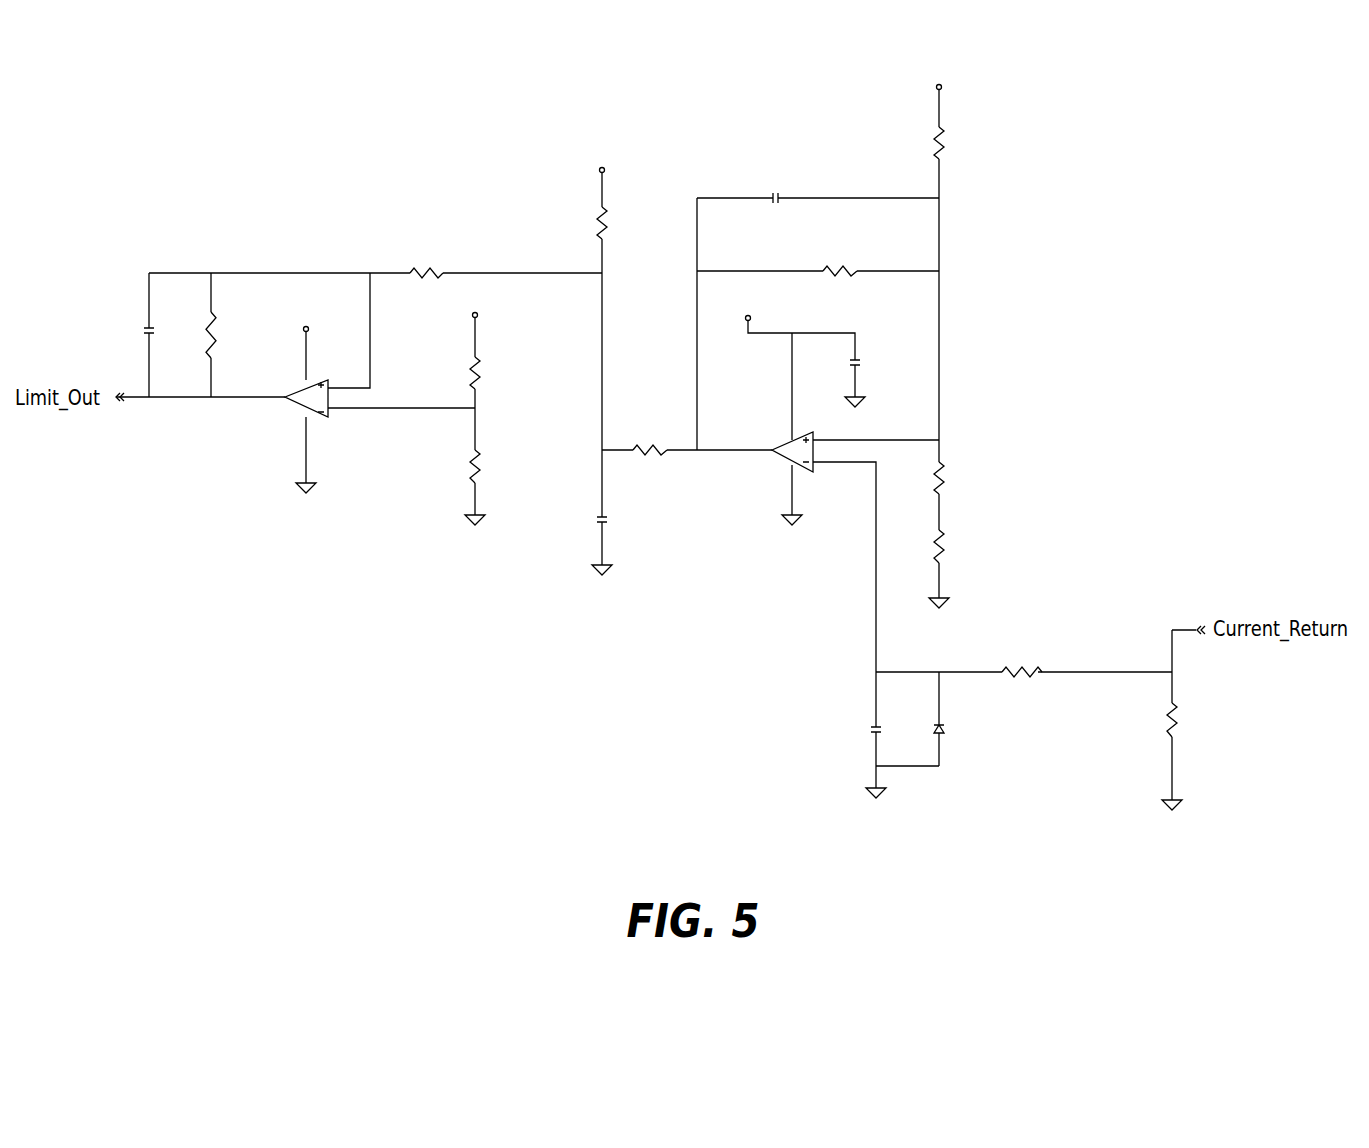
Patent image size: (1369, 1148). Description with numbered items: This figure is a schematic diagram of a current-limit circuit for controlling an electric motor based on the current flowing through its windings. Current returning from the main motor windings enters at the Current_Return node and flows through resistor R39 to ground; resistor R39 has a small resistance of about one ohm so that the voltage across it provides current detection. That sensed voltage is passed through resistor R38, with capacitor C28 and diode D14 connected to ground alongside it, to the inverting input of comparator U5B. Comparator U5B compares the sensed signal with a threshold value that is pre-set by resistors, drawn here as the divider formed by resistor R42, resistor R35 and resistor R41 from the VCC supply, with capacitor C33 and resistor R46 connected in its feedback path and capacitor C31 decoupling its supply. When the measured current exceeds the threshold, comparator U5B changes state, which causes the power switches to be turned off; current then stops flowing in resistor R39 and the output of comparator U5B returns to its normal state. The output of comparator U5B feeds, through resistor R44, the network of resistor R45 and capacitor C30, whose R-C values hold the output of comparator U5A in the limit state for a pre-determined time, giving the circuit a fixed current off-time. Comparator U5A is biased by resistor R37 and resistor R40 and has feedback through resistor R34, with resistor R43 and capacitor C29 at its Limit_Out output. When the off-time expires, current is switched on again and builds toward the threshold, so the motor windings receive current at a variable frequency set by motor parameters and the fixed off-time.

The capacitor 100pf C29 is at (172, 335).
The resistor 100k R43 is at (235, 335).
The comparator U5A is at (297, 397).
The resistor 10k R34 is at (426, 264).
The resistor 20k R37 is at (491, 347).
The resistor 20k R40 is at (496, 466).
The resistor R45 is at (624, 304).
The resistor 100 R44 is at (649, 440).
The capacitor C30 is at (635, 512).
The capacitor 100pf C33 is at (818, 195).
The resistor 3.3k R46 is at (818, 275).
The resistor 10k R42 is at (948, 256).
The capacitor 0.1uf C31 is at (824, 349).
The comparator U5B is at (779, 429).
The resistor 510 R35 is at (961, 485).
The resistor 510 R41 is at (960, 564).
The capacitor 3300pf C28 is at (842, 748).
The diode D14 is at (963, 719).
The resistor 2k R38 is at (1018, 671).
The resistor R39 is at (1224, 748).